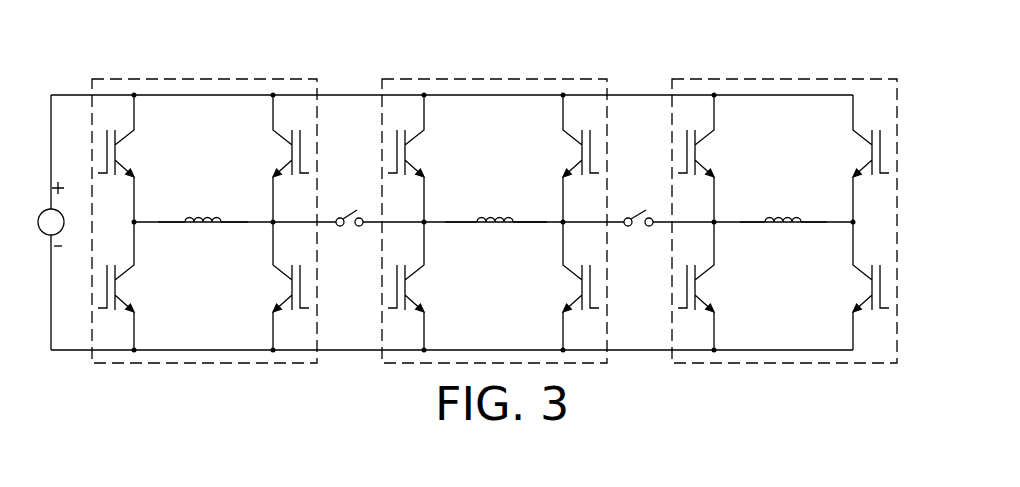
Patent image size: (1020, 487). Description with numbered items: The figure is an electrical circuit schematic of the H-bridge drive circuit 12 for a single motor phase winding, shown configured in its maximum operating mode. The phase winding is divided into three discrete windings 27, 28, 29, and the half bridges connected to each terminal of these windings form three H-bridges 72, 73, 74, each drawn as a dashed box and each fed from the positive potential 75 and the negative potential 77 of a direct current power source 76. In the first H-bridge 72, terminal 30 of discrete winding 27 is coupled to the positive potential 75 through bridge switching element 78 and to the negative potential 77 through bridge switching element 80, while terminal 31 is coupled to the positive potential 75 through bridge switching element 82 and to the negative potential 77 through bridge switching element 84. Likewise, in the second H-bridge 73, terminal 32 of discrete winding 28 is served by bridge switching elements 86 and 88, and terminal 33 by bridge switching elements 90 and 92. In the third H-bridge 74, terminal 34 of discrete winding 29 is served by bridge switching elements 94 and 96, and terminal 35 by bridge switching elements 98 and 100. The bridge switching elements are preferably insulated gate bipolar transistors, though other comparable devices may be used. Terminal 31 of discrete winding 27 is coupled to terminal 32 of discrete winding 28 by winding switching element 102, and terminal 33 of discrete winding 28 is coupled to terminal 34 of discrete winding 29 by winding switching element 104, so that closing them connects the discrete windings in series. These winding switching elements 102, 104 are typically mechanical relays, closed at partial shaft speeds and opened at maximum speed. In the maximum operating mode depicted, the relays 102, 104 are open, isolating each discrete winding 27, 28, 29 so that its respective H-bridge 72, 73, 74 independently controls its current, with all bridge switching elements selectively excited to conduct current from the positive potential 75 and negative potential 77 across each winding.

The drive circuit 12 is at (708, 61).
The discrete winding 27 is at (203, 216).
The discrete winding 28 is at (495, 217).
The discrete winding 29 is at (783, 218).
The terminal 30 is at (158, 224).
The terminal 31 is at (247, 224).
The terminal 32 is at (445, 224).
The terminal 33 is at (547, 224).
The terminal 34 is at (740, 224).
The terminal 35 is at (827, 224).
The H-bridge 72 is at (245, 77).
The H-bridge 73 is at (537, 77).
The H-bridge 74 is at (813, 79).
The positive potential 75 is at (51, 157).
The DC power source 76 is at (40, 228).
The negative potential 77 is at (51, 317).
The bridge switching element 78 is at (115, 152).
The bridge switching element 80 is at (115, 290).
The bridge switching element 82 is at (292, 155).
The bridge switching element 84 is at (292, 290).
The bridge switching element 86 is at (405, 153).
The bridge switching element 88 is at (405, 290).
The bridge switching element 90 is at (582, 155).
The bridge switching element 92 is at (582, 290).
The bridge switching element 94 is at (695, 153).
The bridge switching element 96 is at (695, 290).
The bridge switching element 98 is at (872, 155).
The bridge switching element 100 is at (872, 290).
The winding switching element 102 is at (359, 226).
The winding switching element 104 is at (649, 226).